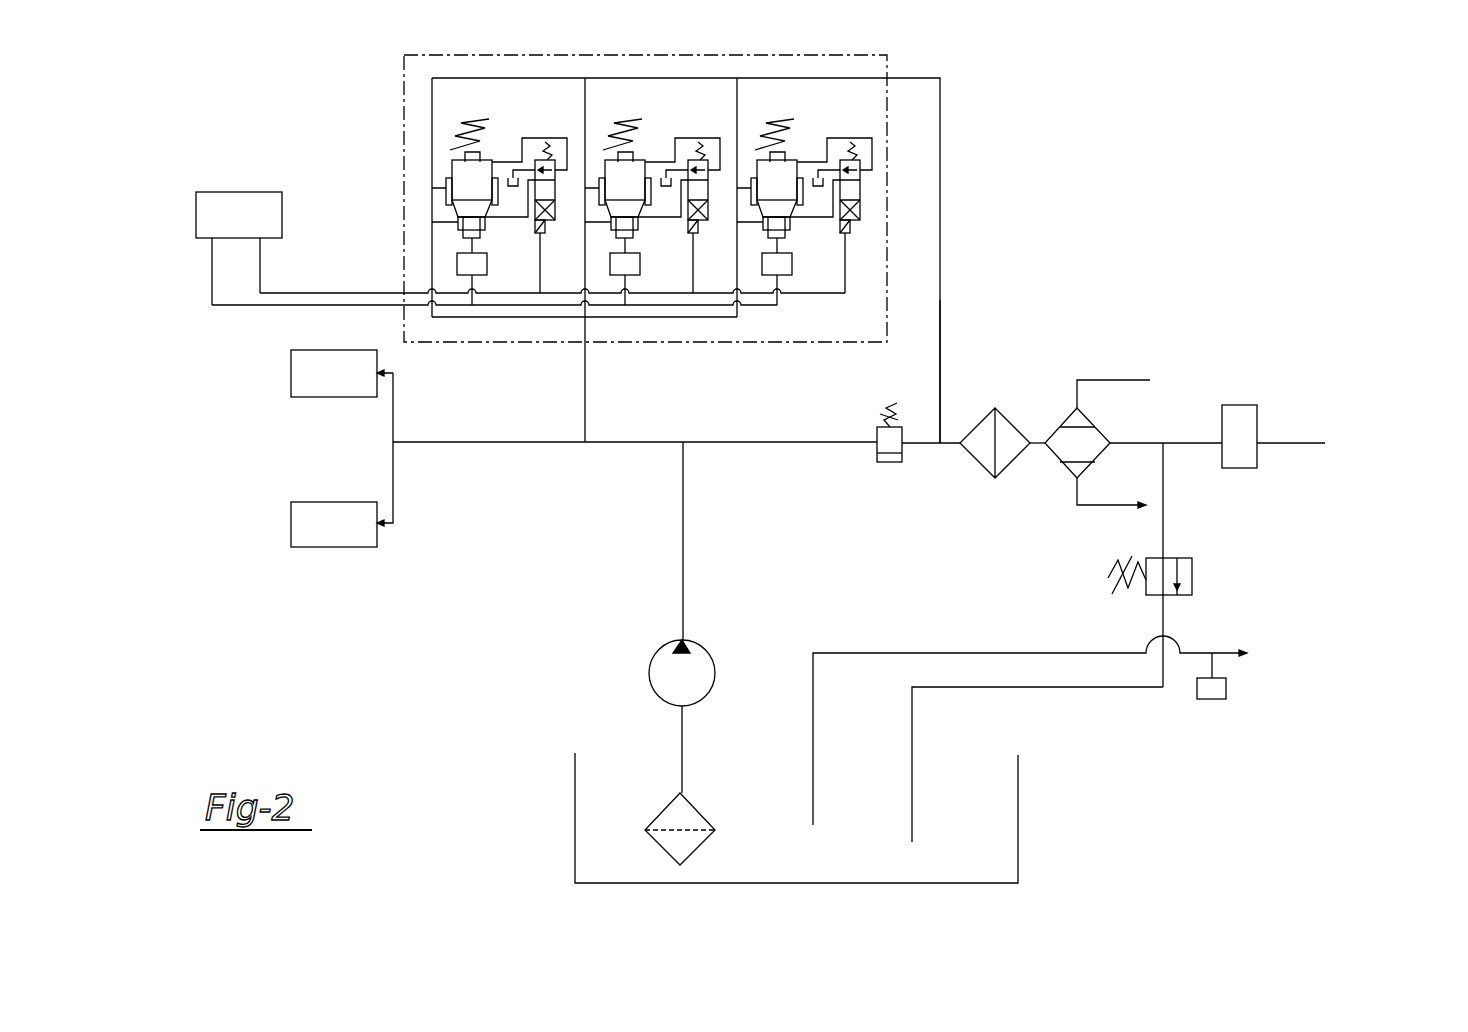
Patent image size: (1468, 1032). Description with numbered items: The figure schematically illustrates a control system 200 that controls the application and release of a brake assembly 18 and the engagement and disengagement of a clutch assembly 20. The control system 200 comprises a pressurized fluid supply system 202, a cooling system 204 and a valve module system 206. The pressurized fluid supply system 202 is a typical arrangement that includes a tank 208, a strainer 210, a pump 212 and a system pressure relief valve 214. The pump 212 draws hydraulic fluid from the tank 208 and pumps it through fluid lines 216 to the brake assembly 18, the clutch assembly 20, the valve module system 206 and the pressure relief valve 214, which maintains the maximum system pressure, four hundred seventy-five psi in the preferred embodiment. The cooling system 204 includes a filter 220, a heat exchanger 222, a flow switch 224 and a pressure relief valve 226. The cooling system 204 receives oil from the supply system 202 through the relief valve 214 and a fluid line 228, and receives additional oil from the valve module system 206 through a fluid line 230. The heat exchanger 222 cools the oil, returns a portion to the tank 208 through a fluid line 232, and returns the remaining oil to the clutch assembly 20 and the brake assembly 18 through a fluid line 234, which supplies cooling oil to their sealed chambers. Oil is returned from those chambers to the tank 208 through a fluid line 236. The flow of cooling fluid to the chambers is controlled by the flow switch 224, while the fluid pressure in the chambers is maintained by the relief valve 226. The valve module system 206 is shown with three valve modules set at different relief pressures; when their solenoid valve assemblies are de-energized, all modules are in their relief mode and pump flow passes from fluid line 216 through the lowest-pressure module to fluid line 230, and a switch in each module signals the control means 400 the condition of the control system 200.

The control system 200 is at (1080, 228).
The pressurized fluid supply system 202 is at (583, 687).
The cooling system 204 is at (1332, 537).
The valve module system 206 is at (930, 63).
The tank 208 is at (575, 778).
The strainer 210 is at (693, 798).
The pump 212 is at (700, 643).
The system pressure relief valve 214 is at (892, 462).
The fluid lines 216 is at (586, 385).
The filter 220 is at (1017, 457).
The heat exchanger 222 is at (1102, 433).
The flow switch 224 is at (1243, 405).
The pressure relief valve 226 is at (1192, 558).
The fluid line 228 is at (925, 443).
The fluid line 230 is at (940, 273).
The fluid line 232 is at (912, 737).
The fluid line 234 is at (1320, 443).
The fluid line 236 is at (850, 653).
The control means 400 is at (253, 229).
The brake assembly 18 is at (350, 389).
The clutch assembly 20 is at (348, 539).